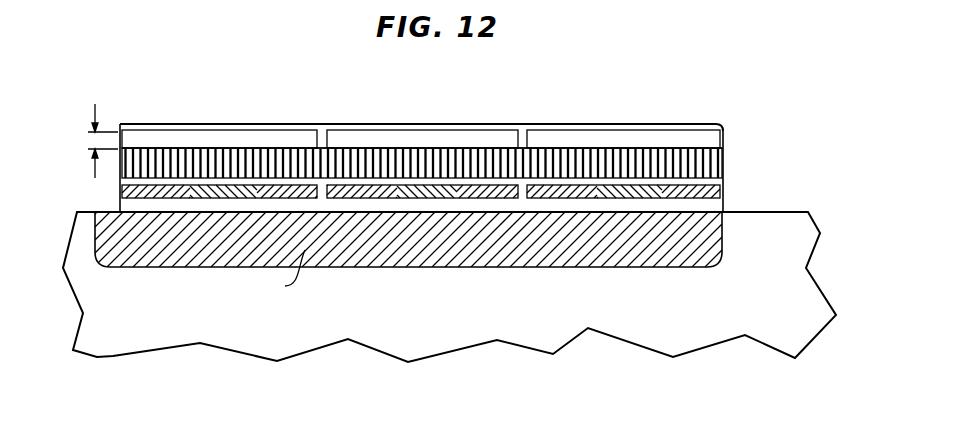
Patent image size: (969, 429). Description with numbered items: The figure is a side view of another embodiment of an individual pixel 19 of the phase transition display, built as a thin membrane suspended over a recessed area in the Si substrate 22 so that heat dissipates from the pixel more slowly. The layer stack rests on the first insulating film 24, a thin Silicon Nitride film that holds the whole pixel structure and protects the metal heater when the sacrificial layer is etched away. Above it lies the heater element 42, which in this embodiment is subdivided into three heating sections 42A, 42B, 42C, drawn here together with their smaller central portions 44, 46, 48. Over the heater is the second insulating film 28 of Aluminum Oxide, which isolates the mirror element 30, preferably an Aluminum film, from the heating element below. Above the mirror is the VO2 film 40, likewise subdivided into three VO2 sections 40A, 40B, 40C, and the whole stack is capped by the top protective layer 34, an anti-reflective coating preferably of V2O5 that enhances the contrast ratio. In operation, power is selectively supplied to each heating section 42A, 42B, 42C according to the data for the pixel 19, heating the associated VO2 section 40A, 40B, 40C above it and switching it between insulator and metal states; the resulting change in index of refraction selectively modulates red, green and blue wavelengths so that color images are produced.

The pixel 19 is at (344, 91).
The Si substrate 22 is at (642, 328).
The first insulating film 24 is at (672, 205).
The second insulating film 28 is at (720, 183).
The mirror element 30 is at (720, 162).
The top protective layer 34 is at (686, 122).
The VO2 film 40 is at (456, 144).
The VO2 section 40A is at (243, 140).
The VO2 section 40B is at (446, 138).
The VO2 section 40C is at (646, 138).
The heater element 42 is at (110, 188).
The heating section 42A is at (155, 196).
The heating section 42B is at (375, 196).
The heating section 42C is at (565, 196).
The heater / resistive element A 44 is at (227, 196).
The heater / resistive element B 46 is at (438, 196).
The heater / resistive element C 48 is at (632, 196).